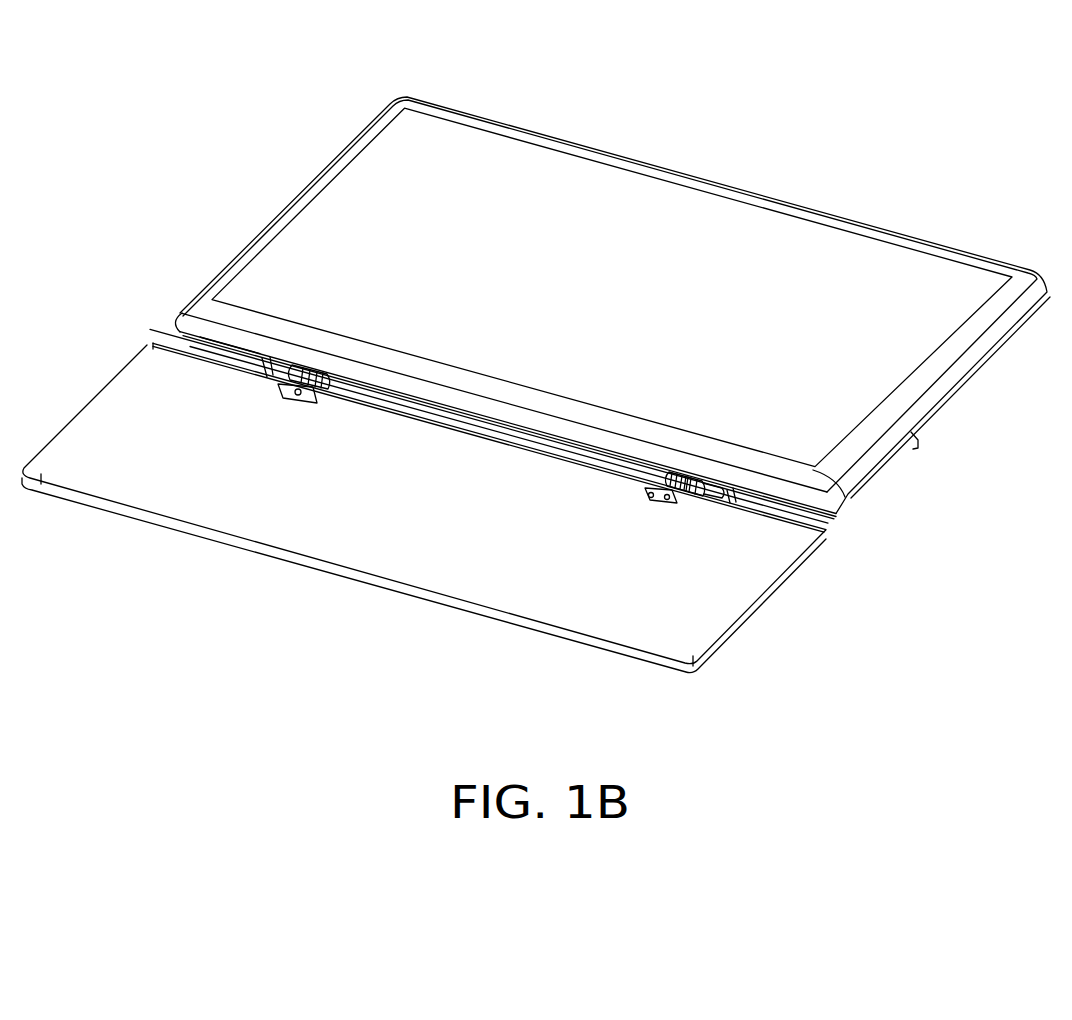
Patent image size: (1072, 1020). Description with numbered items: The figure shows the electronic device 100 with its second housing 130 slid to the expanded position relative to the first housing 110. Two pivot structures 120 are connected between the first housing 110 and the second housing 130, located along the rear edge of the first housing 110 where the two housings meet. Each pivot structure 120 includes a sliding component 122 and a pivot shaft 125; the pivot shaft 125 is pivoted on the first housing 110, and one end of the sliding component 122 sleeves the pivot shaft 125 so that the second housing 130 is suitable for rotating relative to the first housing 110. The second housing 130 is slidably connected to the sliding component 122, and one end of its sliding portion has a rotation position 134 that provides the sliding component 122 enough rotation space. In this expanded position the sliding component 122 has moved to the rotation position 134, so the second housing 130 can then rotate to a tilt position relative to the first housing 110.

The electronic device 100 is at (1032, 717).
The first housing 110 is at (180, 496).
The pivot structure 120 is at (643, 509).
The sliding component 122 is at (713, 493).
The pivot shaft 125 is at (688, 488).
The second housing 130 is at (737, 218).
The rotation position 134 is at (229, 345).